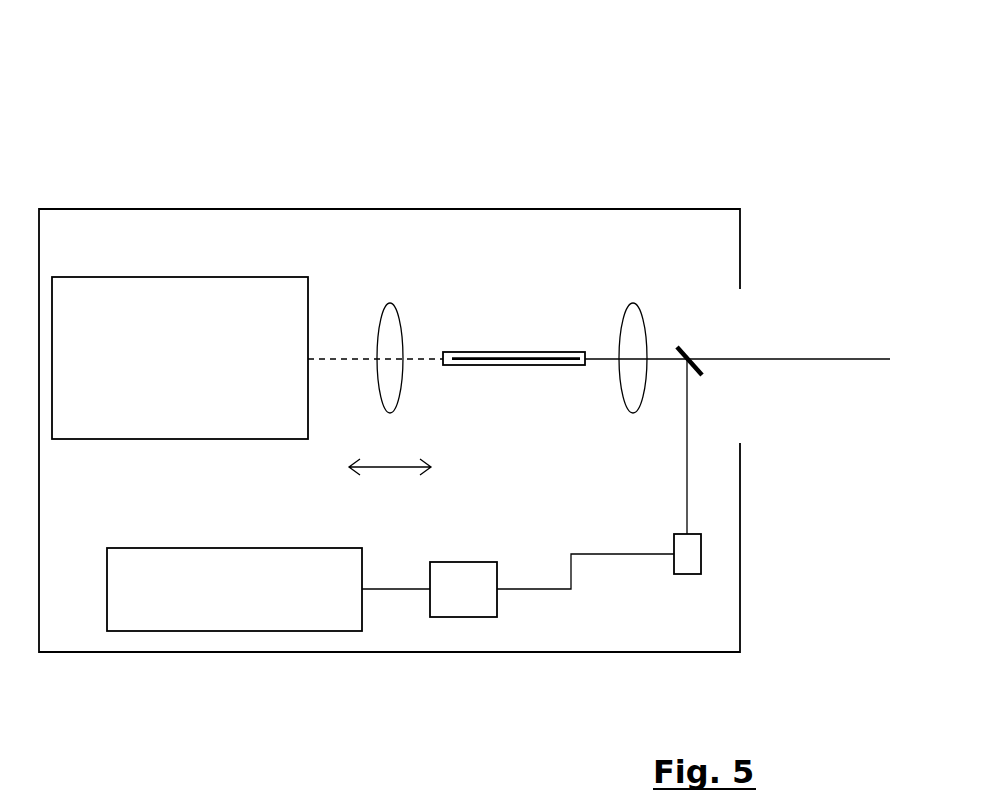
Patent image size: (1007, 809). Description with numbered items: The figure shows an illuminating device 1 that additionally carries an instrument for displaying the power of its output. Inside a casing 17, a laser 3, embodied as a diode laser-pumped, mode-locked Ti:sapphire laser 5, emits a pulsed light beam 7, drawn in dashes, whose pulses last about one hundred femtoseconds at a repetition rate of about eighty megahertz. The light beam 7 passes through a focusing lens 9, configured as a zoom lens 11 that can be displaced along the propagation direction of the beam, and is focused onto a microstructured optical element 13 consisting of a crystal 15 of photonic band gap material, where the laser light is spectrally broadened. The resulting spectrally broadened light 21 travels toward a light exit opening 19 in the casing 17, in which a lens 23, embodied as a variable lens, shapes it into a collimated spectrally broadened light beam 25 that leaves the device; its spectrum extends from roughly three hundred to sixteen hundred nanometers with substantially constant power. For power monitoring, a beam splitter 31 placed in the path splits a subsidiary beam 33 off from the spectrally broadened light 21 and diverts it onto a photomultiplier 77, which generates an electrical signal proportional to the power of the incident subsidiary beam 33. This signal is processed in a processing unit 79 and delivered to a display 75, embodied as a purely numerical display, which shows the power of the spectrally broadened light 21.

The illuminating device 1 is at (224, 128).
The laser 3 is at (238, 467).
The Ti:sapphire laser 5 is at (190, 292).
The pulsed light beam 7 is at (322, 358).
The focusing lens 9 is at (413, 280).
The zoom lens 11 is at (390, 385).
The microstructured optical element 13 is at (541, 400).
The crystal of photonic band gap material 15 is at (530, 358).
The casing 17 is at (215, 655).
The light exit opening 19 is at (740, 428).
The spectrally broadened light 21 is at (605, 333).
The lens 23 is at (633, 332).
The spectrally broadened light beam 25 is at (798, 360).
The beam splitter 31 is at (688, 350).
The subsidiary beam 33 is at (687, 464).
The display 75 is at (148, 563).
The photomultiplier 77 is at (688, 562).
The processing unit 79 is at (443, 575).